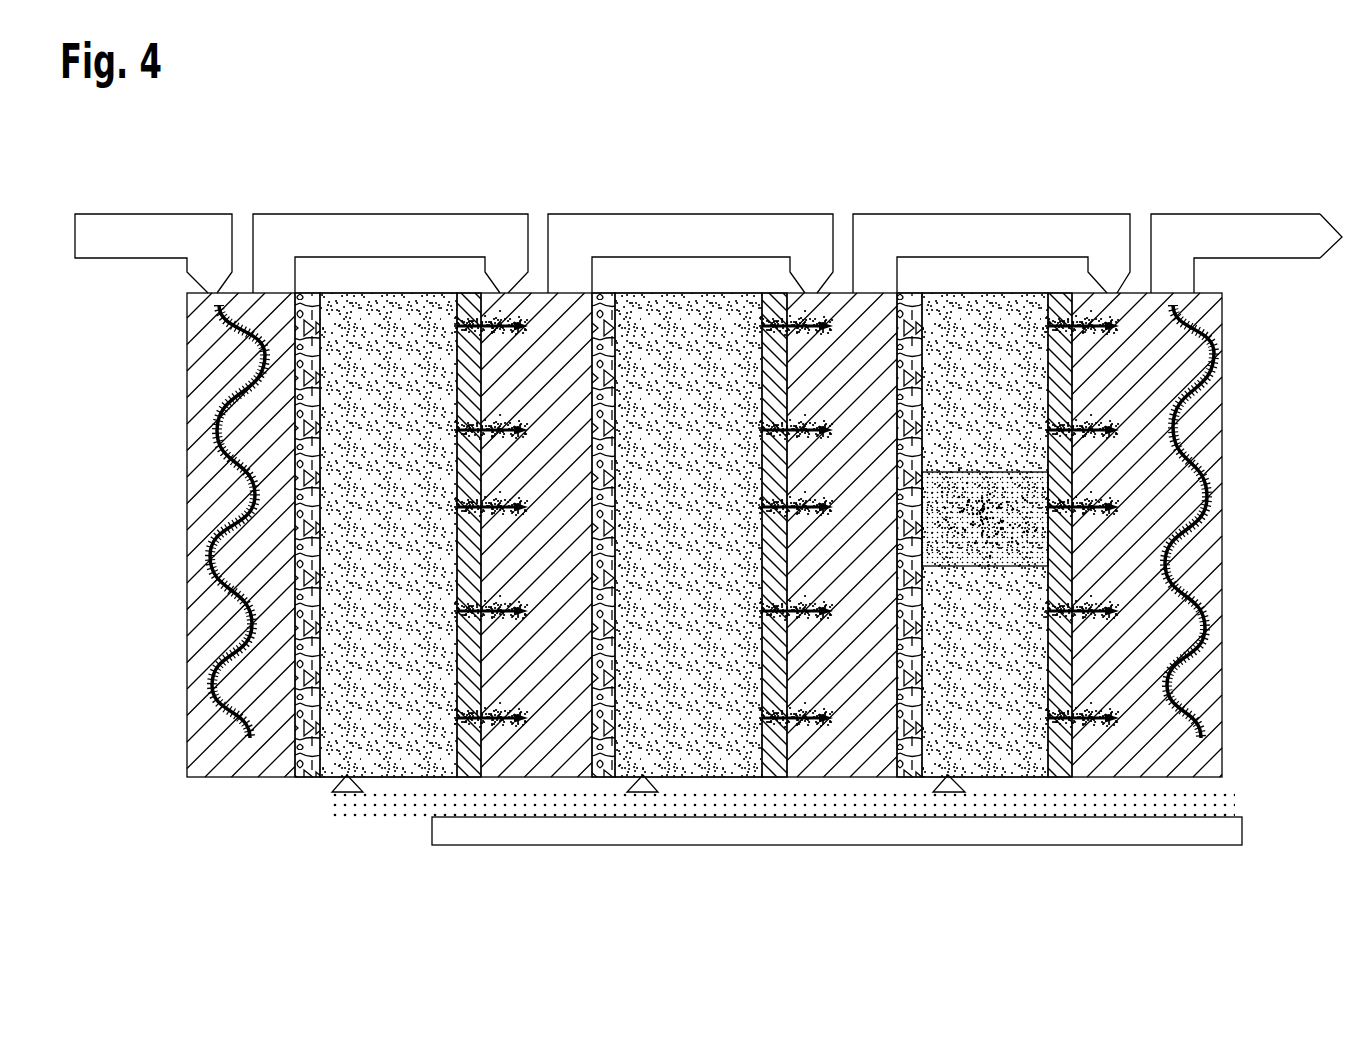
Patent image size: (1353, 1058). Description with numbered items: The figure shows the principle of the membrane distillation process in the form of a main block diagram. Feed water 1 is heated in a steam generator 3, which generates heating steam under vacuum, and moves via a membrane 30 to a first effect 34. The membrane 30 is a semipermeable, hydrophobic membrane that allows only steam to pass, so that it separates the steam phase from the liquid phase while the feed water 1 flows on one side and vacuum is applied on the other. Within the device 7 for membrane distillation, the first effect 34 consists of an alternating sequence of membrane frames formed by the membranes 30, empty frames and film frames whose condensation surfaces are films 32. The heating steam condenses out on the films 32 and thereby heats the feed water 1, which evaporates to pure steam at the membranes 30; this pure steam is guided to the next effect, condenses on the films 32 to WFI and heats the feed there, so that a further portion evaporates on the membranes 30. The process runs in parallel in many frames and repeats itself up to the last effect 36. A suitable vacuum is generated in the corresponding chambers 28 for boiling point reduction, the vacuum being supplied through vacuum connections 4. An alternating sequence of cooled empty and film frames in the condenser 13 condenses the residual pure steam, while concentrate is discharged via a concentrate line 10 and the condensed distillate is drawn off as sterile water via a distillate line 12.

The feed water line 1 is at (110, 217).
The steam generator 3 is at (248, 201).
The vacuum connections 4 is at (1235, 806).
The device for membrane distillation 7 is at (702, 165).
The concentrate line 10 is at (1282, 232).
The distillate line 12 is at (1170, 832).
The condenser 13 is at (1149, 198).
The chambers 28 is at (375, 735).
The membrane 30 is at (306, 772).
The films 32 is at (470, 772).
The first effect 34 is at (546, 201).
The last effect 36 is at (851, 201).